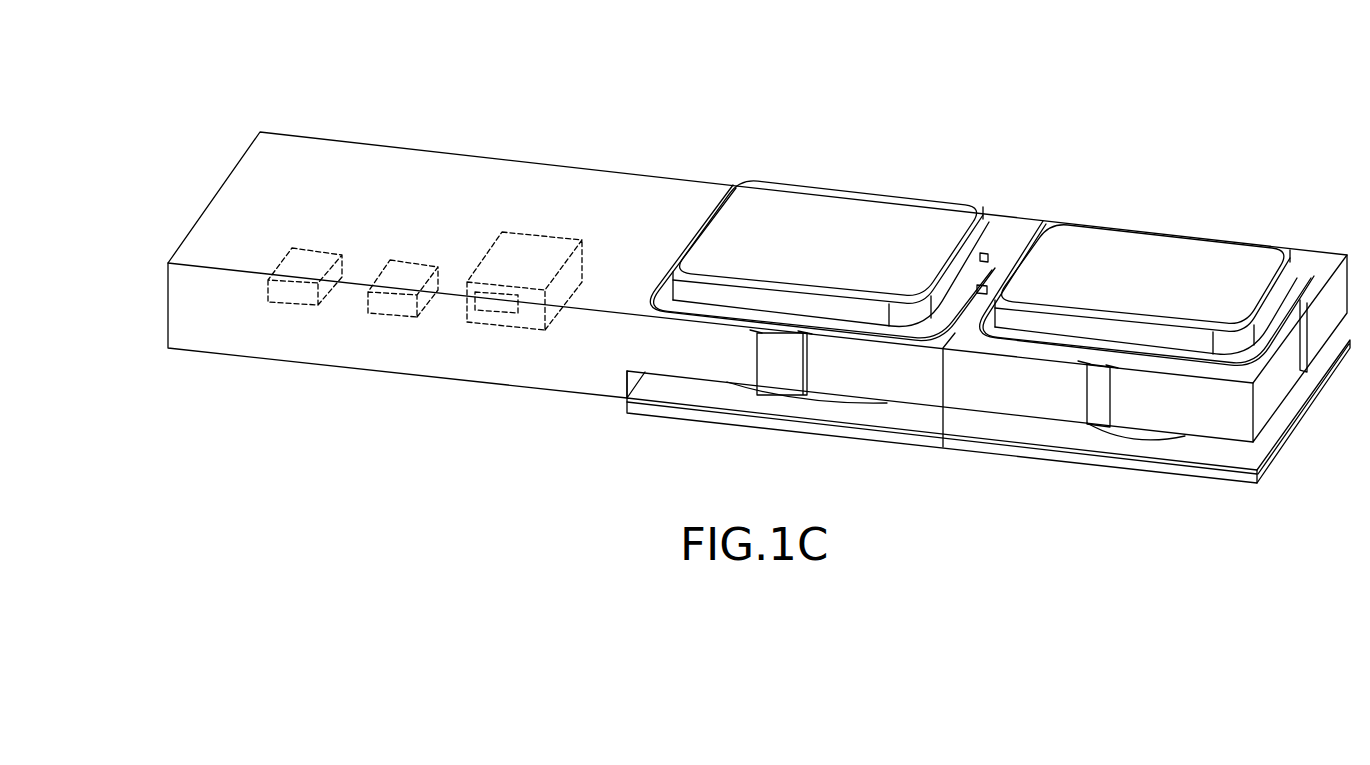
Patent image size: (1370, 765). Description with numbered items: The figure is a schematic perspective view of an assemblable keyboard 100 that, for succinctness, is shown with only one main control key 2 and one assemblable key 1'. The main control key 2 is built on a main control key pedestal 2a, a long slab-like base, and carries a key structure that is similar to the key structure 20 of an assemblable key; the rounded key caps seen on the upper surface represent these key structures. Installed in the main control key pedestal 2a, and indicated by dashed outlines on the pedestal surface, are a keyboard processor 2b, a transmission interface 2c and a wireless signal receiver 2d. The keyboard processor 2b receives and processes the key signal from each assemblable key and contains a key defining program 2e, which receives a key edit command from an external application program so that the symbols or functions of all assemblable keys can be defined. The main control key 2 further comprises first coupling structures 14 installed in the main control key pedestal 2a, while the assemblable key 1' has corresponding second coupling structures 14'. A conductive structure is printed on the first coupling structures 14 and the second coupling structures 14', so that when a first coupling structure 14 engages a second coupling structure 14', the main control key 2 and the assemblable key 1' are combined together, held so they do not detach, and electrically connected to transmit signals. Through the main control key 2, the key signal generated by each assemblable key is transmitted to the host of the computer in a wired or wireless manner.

The assemblable keyboard 100 is at (443, 68).
The main control key 2 is at (527, 143).
The main control key pedestal 2a is at (282, 345).
The keyboard processor 2b is at (545, 251).
The transmission interface 2c is at (405, 268).
The wireless signal receiver 2d is at (302, 257).
The key defining program 2e is at (488, 305).
The key structure 20 is at (868, 203).
The assemblable key 1' is at (988, 326).
The first coupling structure 14 is at (751, 398).
The second coupling structure 14' is at (1061, 432).